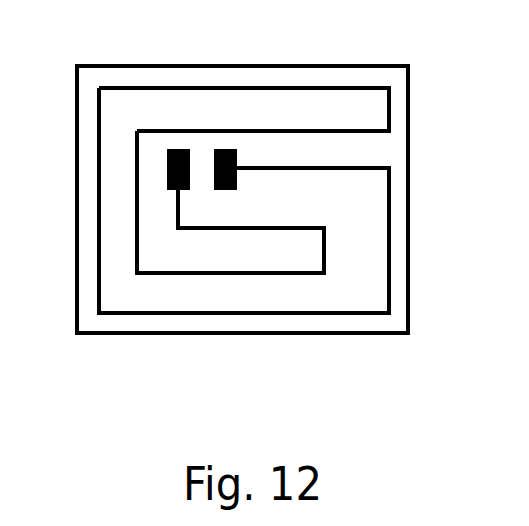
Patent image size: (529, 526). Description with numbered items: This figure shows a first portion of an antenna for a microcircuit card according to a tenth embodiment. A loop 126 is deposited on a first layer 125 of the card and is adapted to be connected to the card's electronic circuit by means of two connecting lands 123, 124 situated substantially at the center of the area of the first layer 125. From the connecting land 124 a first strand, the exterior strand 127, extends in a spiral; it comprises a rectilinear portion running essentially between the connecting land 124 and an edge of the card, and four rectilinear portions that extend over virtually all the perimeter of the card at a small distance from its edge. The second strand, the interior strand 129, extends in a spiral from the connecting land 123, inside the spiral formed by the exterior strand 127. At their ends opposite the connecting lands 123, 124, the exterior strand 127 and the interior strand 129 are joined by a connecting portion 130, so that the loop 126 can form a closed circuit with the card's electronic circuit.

The connecting land 123 is at (173, 149).
The connecting land 124 is at (226, 149).
The first layer 125 is at (387, 321).
The loop 126 is at (140, 297).
The exterior strand 127 is at (389, 224).
The interior strand 129 is at (232, 275).
The connecting portion 130 is at (390, 108).